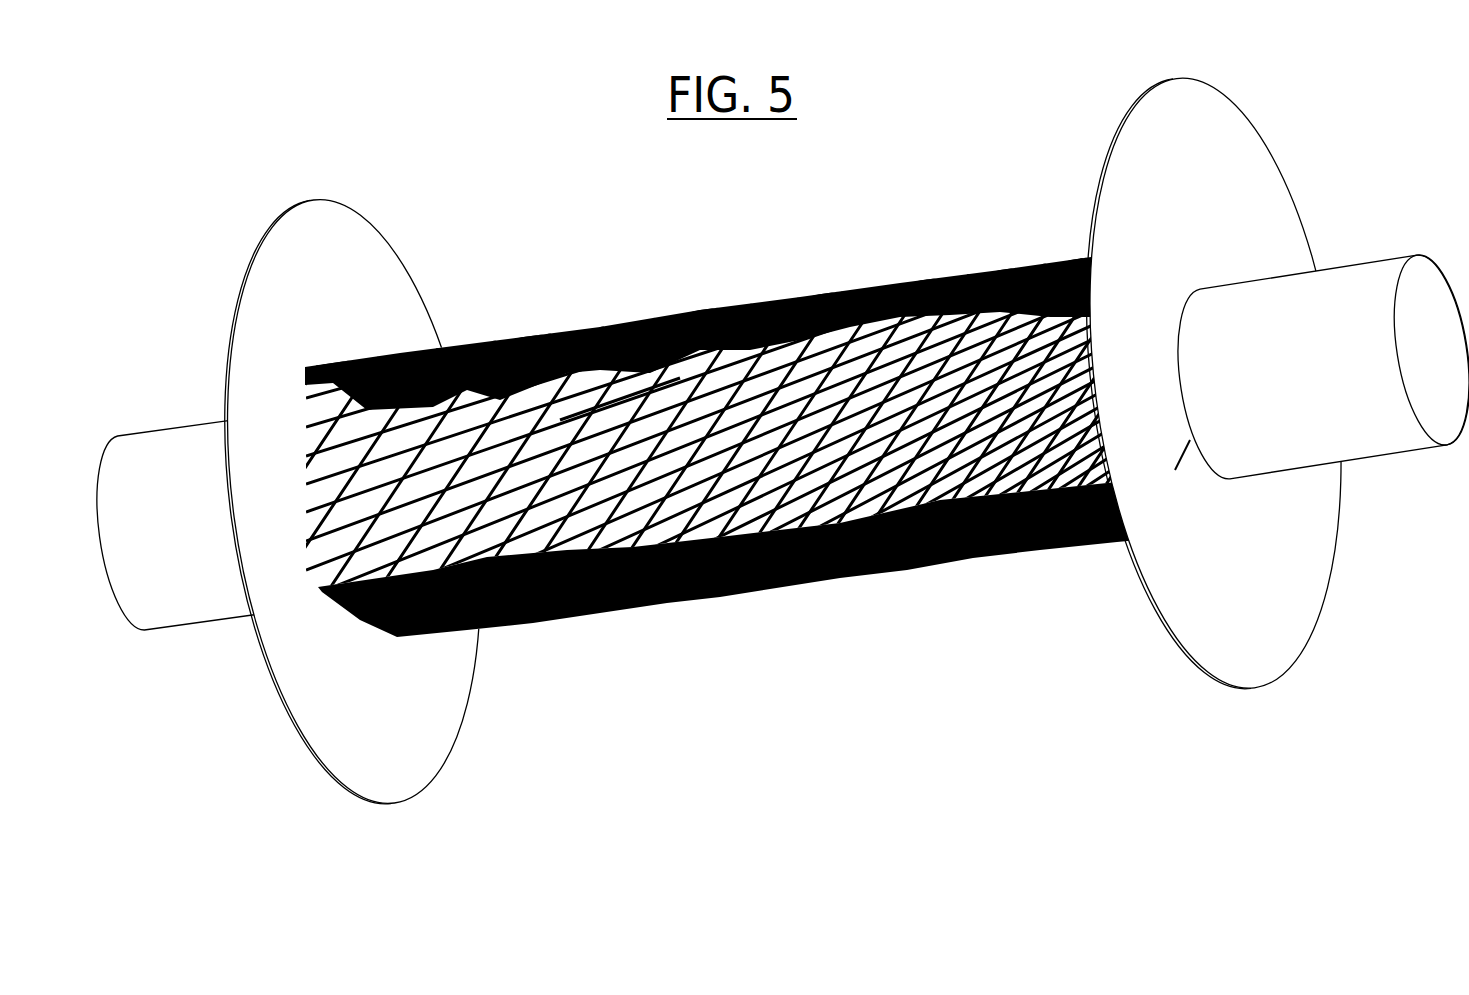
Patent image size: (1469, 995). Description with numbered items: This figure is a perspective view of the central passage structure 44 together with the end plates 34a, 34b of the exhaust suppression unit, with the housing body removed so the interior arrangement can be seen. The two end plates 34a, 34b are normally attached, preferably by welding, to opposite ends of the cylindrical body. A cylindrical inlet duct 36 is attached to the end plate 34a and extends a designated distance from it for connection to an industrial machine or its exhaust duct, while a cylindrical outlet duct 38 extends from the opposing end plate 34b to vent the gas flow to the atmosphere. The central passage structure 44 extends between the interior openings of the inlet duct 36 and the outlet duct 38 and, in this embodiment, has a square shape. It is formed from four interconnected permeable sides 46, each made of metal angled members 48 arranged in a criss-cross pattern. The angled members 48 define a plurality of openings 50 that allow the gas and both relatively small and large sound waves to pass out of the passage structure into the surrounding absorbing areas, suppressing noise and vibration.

The end plate 34a is at (1215, 358).
The end plate 34b is at (354, 474).
The inlet duct 36 is at (1322, 313).
The outlet duct 38 is at (188, 507).
The central passage structure 44 is at (732, 571).
The permeable sides 46 is at (700, 433).
The angled members 48 is at (605, 611).
The openings 50 is at (926, 565).